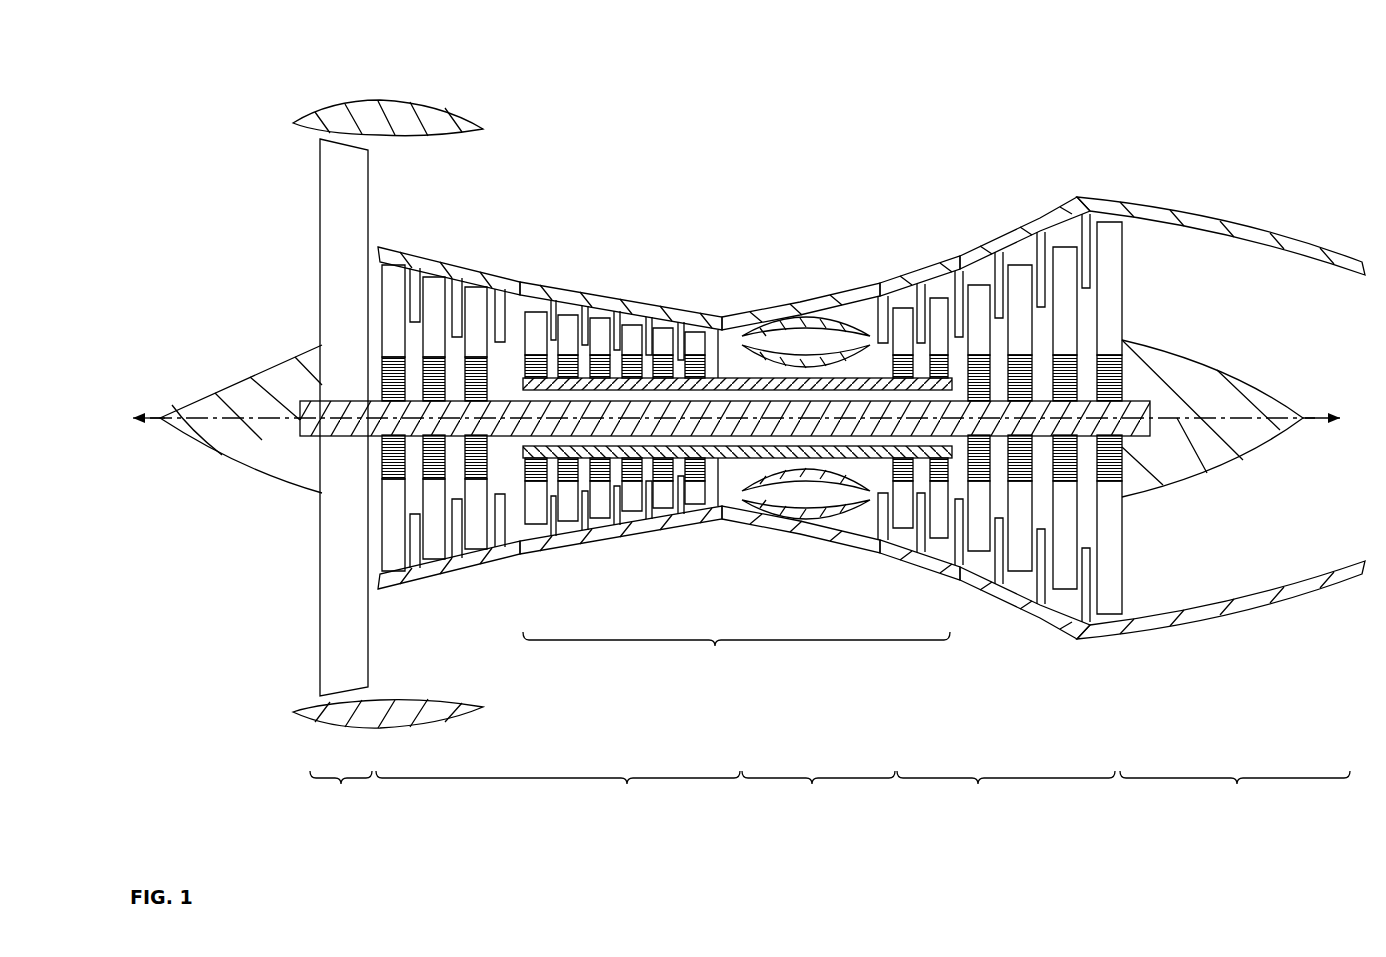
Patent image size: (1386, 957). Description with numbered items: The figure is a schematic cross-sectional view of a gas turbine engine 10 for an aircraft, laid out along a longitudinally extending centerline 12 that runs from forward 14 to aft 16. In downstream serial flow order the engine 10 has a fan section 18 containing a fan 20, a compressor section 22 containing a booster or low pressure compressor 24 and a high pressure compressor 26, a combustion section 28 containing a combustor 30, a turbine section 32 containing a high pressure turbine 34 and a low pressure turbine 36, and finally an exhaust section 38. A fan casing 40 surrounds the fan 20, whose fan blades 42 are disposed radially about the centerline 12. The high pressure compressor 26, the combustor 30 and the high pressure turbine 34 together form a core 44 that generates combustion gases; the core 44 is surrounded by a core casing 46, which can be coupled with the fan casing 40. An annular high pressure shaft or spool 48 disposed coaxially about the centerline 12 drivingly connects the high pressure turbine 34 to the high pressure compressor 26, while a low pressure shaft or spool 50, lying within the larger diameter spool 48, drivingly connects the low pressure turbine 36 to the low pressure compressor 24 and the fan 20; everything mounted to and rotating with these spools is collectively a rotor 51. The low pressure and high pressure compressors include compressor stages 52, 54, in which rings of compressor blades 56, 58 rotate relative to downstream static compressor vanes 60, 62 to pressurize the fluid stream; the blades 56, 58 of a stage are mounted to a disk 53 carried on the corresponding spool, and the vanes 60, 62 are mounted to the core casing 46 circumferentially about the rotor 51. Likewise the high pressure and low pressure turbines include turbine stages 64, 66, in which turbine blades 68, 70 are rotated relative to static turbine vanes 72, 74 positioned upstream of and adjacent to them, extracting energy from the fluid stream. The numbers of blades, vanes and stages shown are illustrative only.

The gas turbine engine 10 is at (185, 36).
The centerline 12 is at (218, 415).
The forward 14 is at (132, 418).
The aft 16 is at (1340, 418).
The fan section 18 is at (341, 793).
The fan 20 is at (357, 386).
The compressor section 22 is at (558, 793).
The low pressure compressor 24 is at (512, 566).
The high pressure compressor 26 is at (676, 538).
The combustion section 28 is at (818, 793).
The combustor 30 is at (860, 318).
The turbine section 32 is at (1006, 793).
The high pressure turbine 34 is at (877, 562).
The low pressure turbine 36 is at (1005, 602).
The exhaust section 38 is at (1235, 793).
The fan casing 40 is at (391, 103).
The fan blades 42 is at (330, 636).
The core 44 is at (736, 653).
The core casing 46 is at (785, 310).
The HP shaft or spool 48 is at (735, 385).
The LP shaft or spool 50 is at (500, 395).
The rotor 51 is at (660, 398).
The compressor stages 52 is at (378, 236).
The disk 53 is at (1018, 365).
The compressor stages 54 is at (535, 288).
The compressor blades 56 is at (395, 272).
The compressor blades 58 is at (546, 312).
The static compressor vanes 60 is at (415, 282).
The static compressor vanes 62 is at (547, 340).
The turbine stages 64 is at (908, 268).
The turbine stages 66 is at (1041, 216).
The turbine blades 68 is at (941, 315).
The turbine blades 70 is at (1063, 265).
The static turbine vanes 72 is at (922, 310).
The static turbine vanes 74 is at (1045, 237).